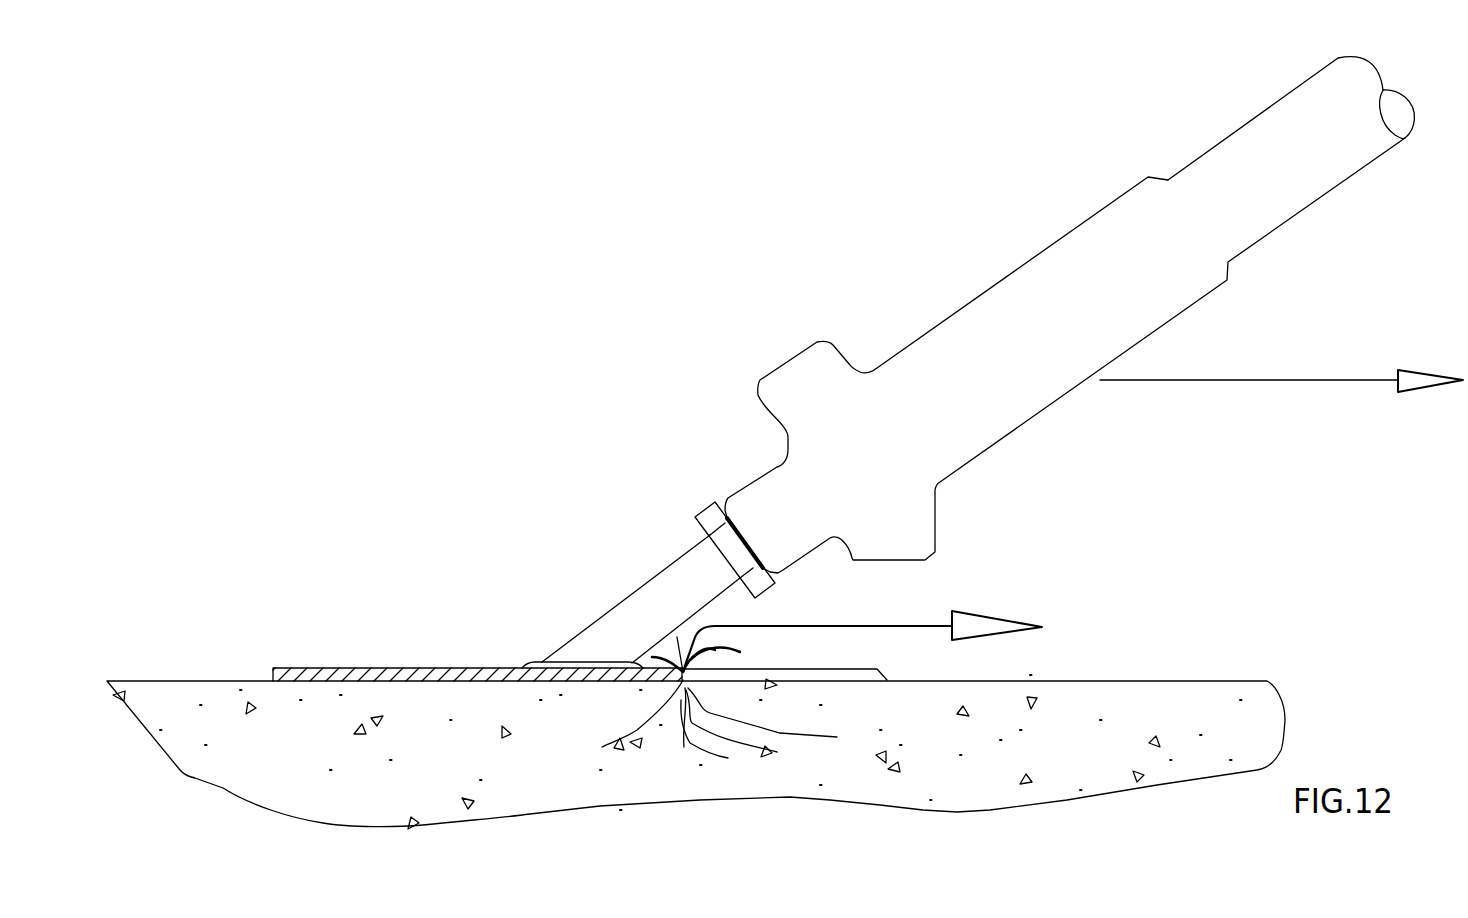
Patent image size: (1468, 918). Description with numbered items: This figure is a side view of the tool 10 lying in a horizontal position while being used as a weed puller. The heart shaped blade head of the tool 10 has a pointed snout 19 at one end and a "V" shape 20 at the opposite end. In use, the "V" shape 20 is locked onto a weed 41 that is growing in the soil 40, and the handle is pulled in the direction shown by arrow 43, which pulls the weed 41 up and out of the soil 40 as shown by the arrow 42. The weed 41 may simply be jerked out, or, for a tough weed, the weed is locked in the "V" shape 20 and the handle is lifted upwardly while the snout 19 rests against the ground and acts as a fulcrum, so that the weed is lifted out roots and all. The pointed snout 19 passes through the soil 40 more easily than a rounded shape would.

The tool 10 is at (770, 216).
The pointed snout 19 is at (275, 681).
The "V" shape 20 is at (683, 672).
The soil 40 is at (1138, 720).
The weed 41 is at (715, 652).
The arrow 42 is at (885, 626).
The arrow 43 is at (1372, 380).